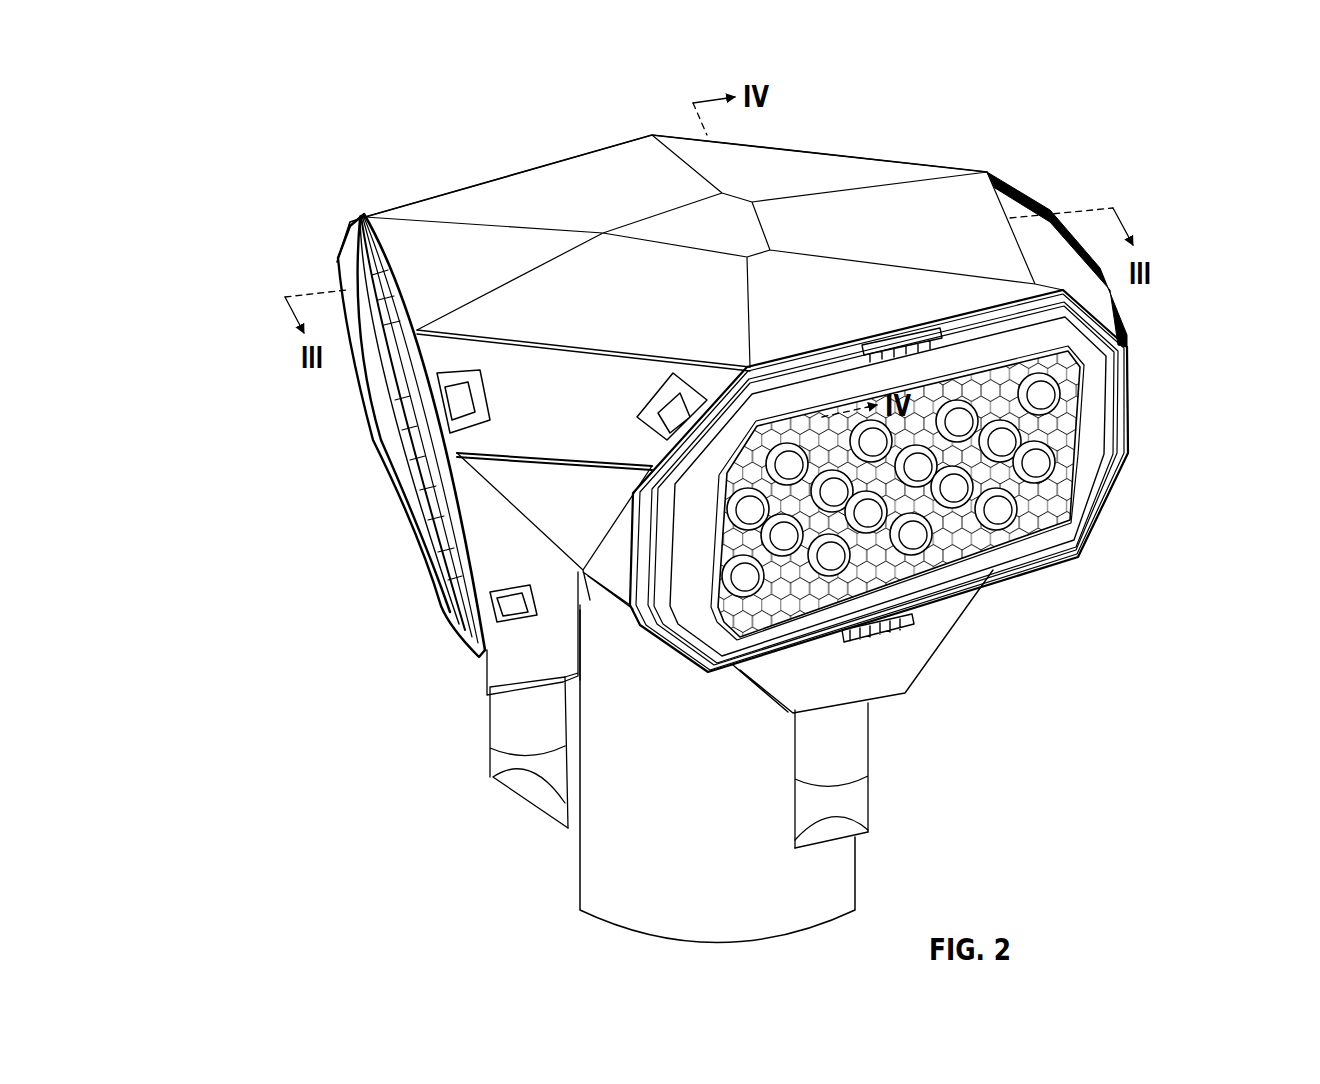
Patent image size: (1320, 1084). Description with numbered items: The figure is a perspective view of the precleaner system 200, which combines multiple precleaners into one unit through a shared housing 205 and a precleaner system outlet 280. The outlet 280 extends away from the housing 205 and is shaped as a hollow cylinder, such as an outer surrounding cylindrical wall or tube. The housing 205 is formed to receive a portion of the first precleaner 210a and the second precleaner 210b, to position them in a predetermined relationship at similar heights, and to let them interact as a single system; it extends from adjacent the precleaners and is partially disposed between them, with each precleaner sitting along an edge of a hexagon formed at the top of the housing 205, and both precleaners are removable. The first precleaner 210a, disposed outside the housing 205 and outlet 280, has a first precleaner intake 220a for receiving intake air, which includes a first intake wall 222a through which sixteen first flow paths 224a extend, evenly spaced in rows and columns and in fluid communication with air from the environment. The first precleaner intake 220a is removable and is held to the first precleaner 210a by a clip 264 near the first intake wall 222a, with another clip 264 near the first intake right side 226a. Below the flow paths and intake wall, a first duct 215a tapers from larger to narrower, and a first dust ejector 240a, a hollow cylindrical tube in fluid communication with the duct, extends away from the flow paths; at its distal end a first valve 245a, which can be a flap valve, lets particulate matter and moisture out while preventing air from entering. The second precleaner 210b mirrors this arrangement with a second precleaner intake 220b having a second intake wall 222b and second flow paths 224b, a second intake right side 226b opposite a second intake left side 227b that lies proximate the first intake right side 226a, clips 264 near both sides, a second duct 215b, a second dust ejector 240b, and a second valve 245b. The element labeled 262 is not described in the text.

The precleaner system 200 is at (625, 80).
The housing 205 is at (820, 176).
The first precleaner 210a is at (216, 396).
The second precleaner 210b is at (1190, 496).
The first duct 215a is at (498, 651).
The second duct 215b is at (960, 612).
The first precleaner intake 220a is at (360, 469).
The second precleaner intake 220b is at (1087, 611).
The first intake wall 222a is at (422, 540).
The second intake wall 222b is at (1072, 522).
The first flow paths 224a is at (363, 442).
The second flow paths 224b is at (1050, 465).
The first intake right side 226a is at (430, 580).
The second intake right side 226b is at (1131, 392).
The second intake left side 227b is at (590, 602).
The first dust ejector 240a is at (500, 735).
The second dust ejector 240b is at (868, 745).
The first valve 245a is at (520, 782).
The second valve 245b is at (870, 800).
The connector 262 is at (905, 332).
The clip 264 is at (653, 393).
The precleaner system outlet 280 is at (590, 893).